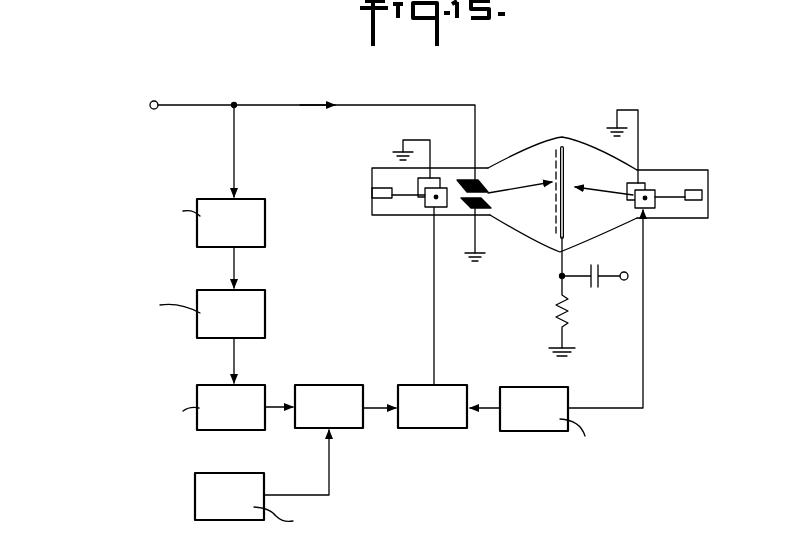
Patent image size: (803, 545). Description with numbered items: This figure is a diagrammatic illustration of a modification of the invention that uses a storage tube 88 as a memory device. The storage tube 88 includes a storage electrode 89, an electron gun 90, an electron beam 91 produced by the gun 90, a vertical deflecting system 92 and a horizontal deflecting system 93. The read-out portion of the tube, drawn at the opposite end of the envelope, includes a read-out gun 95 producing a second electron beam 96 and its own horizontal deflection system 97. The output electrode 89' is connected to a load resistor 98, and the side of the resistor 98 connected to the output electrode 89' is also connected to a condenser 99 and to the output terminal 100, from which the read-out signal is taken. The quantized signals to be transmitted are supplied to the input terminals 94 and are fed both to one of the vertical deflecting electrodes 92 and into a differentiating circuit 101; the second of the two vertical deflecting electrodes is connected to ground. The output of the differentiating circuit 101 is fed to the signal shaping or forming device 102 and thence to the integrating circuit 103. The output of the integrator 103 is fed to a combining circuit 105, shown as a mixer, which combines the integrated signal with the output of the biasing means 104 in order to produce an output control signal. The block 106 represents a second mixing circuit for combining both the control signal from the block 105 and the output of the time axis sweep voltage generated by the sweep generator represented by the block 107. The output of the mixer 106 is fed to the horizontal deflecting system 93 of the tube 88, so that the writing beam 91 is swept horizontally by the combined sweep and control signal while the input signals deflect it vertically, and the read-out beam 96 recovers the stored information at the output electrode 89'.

The storage tube 88 is at (562, 136).
The storage electrode 89 is at (535, 205).
The output electrode 89' is at (584, 212).
The electron gun 90 is at (383, 198).
The electron beam 91 is at (520, 185).
The vertical deflecting system 92 is at (483, 180).
The horizontal deflecting system 93 is at (423, 207).
The input terminals 94 is at (165, 97).
The read-out gun 95 is at (692, 201).
The electron beam 96 is at (597, 188).
The horizontal deflection system 97 is at (650, 192).
The load resistor 98 is at (558, 300).
The condenser 99 is at (614, 258).
The output terminal 100 is at (626, 281).
The differentiating circuit 101 is at (208, 199).
The signal shaping device 102 is at (210, 290).
The integrating circuit 103 is at (209, 385).
The biasing means 104 is at (202, 473).
The combining circuit 105 is at (348, 362).
The mixing circuit 106 is at (425, 428).
The time axis sweep voltage generator 107 is at (518, 431).